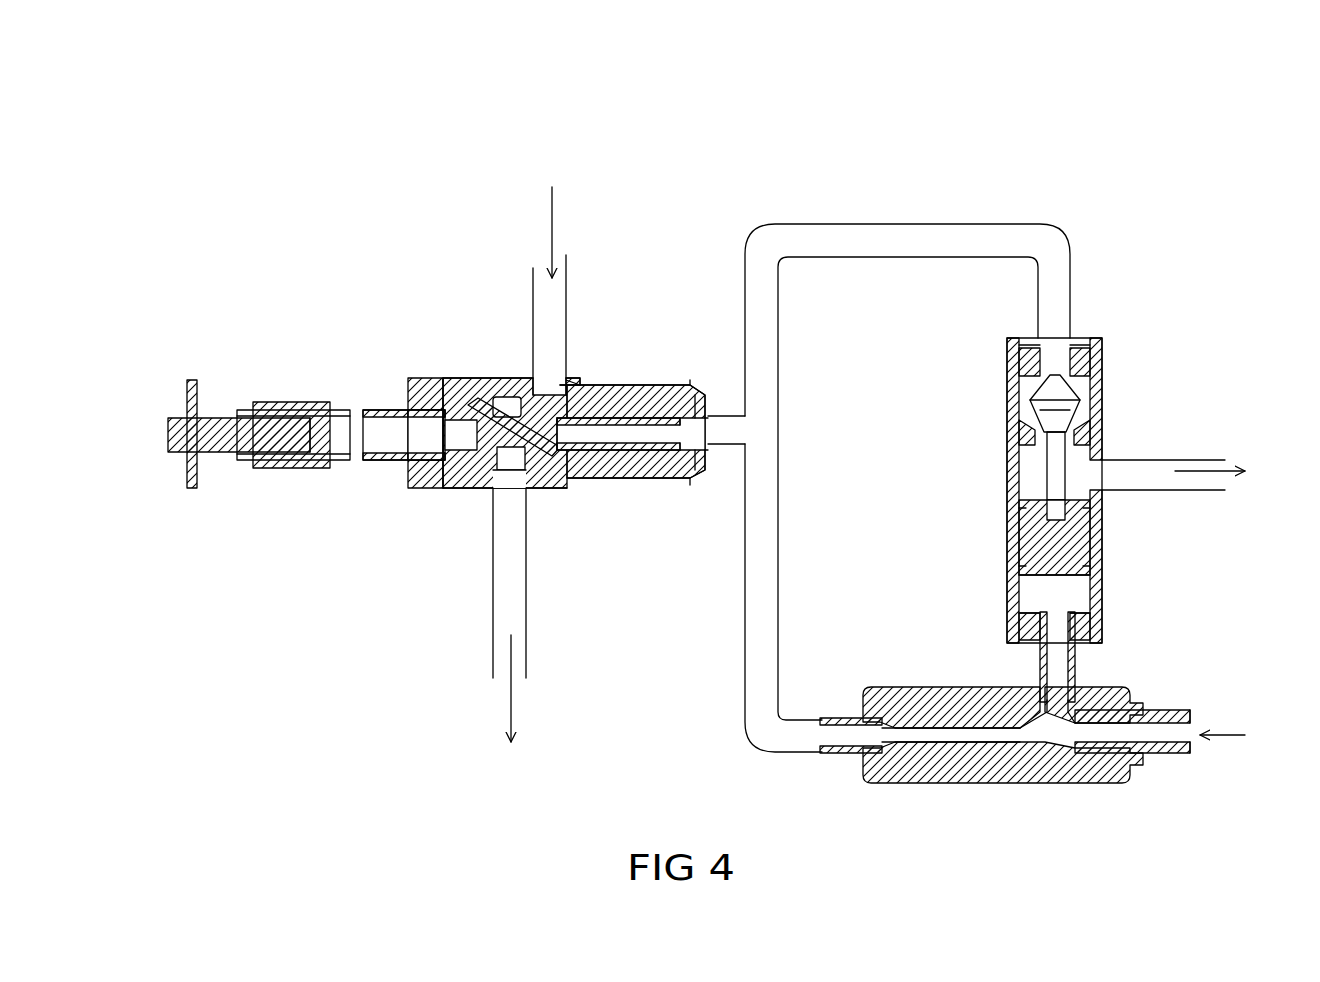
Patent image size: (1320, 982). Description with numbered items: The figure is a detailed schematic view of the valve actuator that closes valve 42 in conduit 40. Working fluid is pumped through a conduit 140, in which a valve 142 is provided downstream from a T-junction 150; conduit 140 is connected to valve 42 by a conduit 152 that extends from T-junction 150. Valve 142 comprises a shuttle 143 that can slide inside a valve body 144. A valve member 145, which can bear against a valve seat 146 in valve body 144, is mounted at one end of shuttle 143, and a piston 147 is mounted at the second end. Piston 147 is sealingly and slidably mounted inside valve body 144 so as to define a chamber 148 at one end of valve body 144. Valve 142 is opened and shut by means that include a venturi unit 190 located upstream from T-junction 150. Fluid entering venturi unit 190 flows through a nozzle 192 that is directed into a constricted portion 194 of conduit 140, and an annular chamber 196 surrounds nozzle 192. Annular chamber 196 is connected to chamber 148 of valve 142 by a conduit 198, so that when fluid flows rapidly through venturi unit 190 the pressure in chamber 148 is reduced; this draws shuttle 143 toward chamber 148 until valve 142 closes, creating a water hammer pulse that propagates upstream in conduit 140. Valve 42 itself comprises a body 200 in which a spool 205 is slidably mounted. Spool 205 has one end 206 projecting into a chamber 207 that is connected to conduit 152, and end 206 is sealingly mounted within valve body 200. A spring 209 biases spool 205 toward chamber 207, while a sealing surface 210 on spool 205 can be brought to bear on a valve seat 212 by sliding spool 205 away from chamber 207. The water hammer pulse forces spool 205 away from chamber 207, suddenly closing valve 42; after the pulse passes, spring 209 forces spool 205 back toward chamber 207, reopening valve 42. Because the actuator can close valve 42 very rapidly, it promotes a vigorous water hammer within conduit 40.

The conduit 40 is at (540, 290).
The valve 42 is at (500, 464).
The conduit 140 is at (838, 240).
The valve 142 is at (1105, 409).
The shuttle 143 is at (1103, 450).
The valve body 144 is at (1105, 582).
The valve member 145 is at (1057, 385).
The valve seat 146 is at (1015, 385).
The piston 147 is at (1105, 525).
The chamber 148 is at (1105, 593).
The T-junction 150 is at (763, 428).
The conduit 152 is at (722, 470).
The venturi unit 190 is at (1036, 760).
The nozzle 192 is at (1027, 750).
The constricted portion 194 is at (962, 740).
The annular chamber 196 is at (1045, 690).
The conduit 198 is at (1030, 636).
The body 200 is at (545, 488).
The spool 205 is at (502, 488).
The end 206 is at (636, 468).
The chamber 207 is at (641, 382).
The spring 209 is at (445, 485).
The sealing surface 210 is at (553, 383).
The valve seat 212 is at (533, 380).